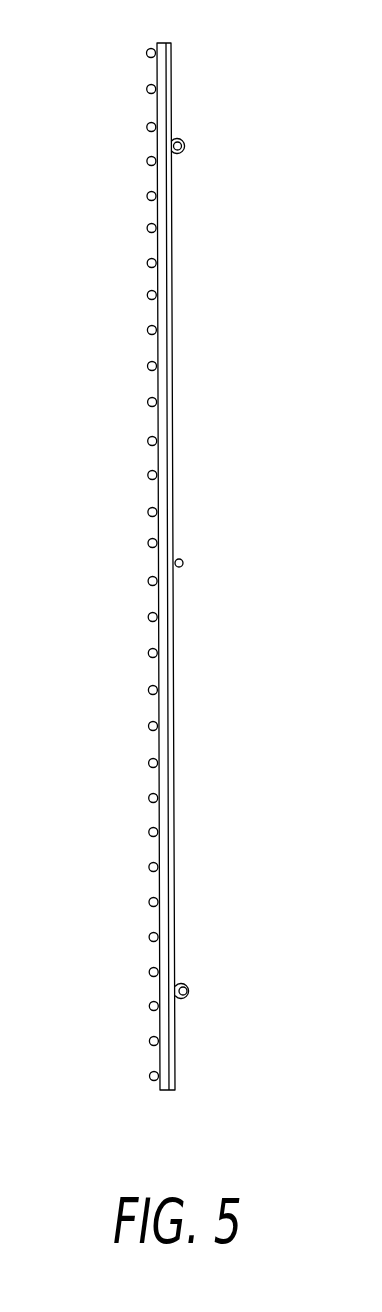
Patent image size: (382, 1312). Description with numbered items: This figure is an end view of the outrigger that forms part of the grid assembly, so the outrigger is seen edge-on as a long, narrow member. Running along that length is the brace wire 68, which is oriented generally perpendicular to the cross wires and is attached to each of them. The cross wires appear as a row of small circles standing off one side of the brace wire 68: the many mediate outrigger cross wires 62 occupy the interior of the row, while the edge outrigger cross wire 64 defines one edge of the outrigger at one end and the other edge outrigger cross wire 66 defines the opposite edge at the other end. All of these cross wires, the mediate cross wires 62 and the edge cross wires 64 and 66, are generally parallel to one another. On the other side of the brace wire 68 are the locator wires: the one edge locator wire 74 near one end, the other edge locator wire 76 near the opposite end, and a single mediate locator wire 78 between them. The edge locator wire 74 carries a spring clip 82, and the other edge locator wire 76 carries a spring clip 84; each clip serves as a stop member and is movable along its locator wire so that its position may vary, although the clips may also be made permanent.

The mediate outrigger cross wires 62 is at (152, 258).
The edge outrigger cross wire 64 is at (151, 1081).
The other edge outrigger cross wire 66 is at (147, 51).
The brace wire 68 is at (163, 380).
The edge locator wire 74 is at (188, 984).
The other edge locator wire 76 is at (187, 146).
The mediate locator wire 78 is at (184, 562).
The spring clip 82 is at (185, 998).
The spring clip 84 is at (176, 138).